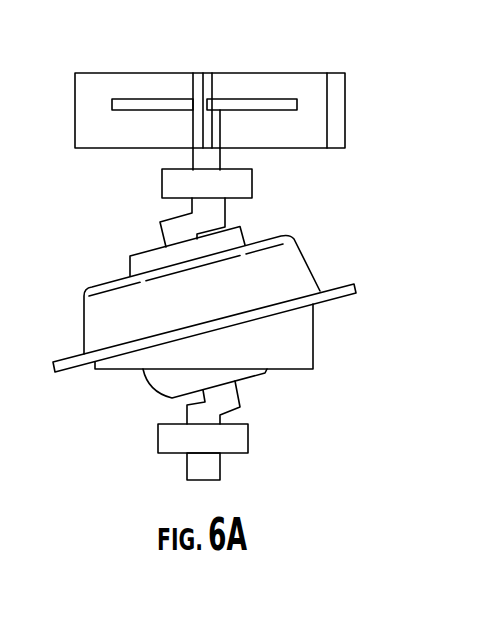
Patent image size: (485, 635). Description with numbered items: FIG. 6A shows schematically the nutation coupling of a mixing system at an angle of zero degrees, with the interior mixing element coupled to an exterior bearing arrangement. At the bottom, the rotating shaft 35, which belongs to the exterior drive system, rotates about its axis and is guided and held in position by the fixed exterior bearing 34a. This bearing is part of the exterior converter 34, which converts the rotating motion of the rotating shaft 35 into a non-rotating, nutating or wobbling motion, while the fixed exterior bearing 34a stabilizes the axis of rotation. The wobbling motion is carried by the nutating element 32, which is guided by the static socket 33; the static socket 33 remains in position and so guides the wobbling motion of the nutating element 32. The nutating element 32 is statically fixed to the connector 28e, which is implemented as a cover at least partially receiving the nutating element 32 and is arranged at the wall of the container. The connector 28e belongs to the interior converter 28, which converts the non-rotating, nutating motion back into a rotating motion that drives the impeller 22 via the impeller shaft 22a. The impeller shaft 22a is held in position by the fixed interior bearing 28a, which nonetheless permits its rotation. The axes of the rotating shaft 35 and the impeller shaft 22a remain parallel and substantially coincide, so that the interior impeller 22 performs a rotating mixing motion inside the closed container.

The impeller 22 is at (247, 83).
The impeller shaft 22a is at (217, 160).
The interior converter 28 is at (95, 155).
The fixed interior bearing 28a is at (242, 183).
The connector 28e is at (298, 268).
The nutating element 32 is at (162, 378).
The static socket 33 is at (303, 342).
The exterior converter 34 is at (258, 394).
The fixed exterior bearing 34a is at (168, 438).
The rotating shaft 35 is at (190, 463).